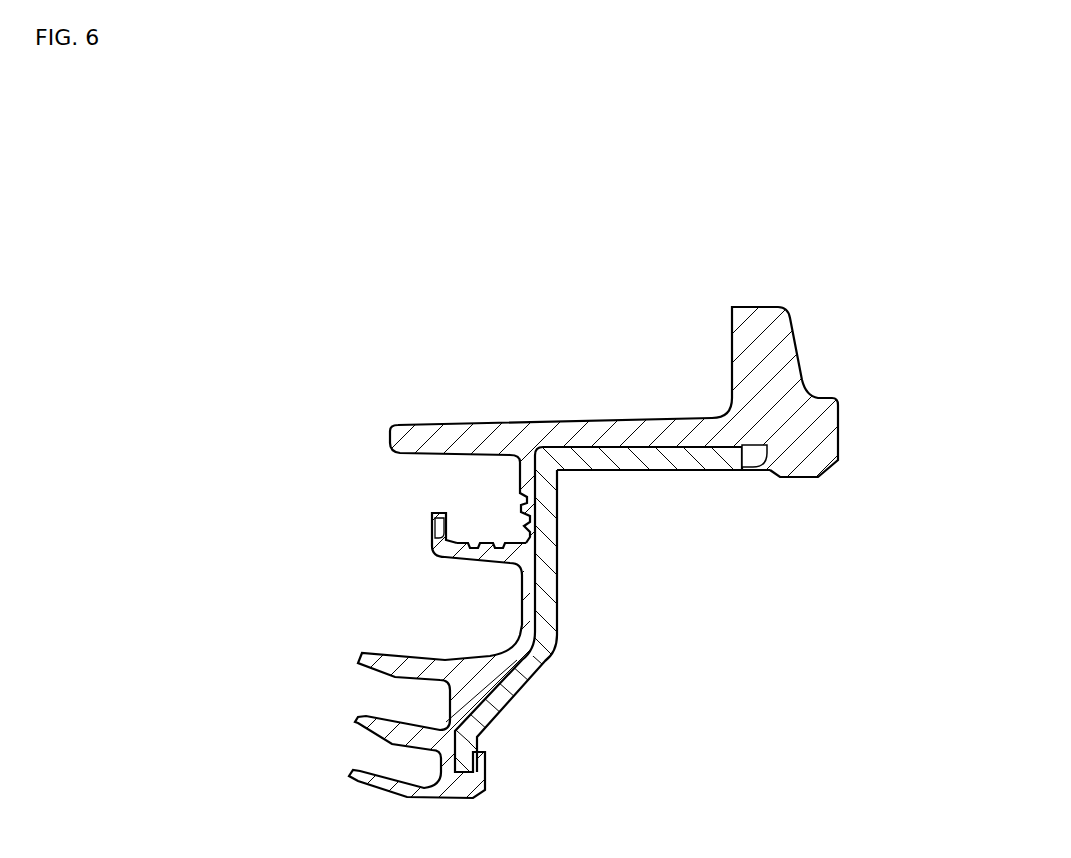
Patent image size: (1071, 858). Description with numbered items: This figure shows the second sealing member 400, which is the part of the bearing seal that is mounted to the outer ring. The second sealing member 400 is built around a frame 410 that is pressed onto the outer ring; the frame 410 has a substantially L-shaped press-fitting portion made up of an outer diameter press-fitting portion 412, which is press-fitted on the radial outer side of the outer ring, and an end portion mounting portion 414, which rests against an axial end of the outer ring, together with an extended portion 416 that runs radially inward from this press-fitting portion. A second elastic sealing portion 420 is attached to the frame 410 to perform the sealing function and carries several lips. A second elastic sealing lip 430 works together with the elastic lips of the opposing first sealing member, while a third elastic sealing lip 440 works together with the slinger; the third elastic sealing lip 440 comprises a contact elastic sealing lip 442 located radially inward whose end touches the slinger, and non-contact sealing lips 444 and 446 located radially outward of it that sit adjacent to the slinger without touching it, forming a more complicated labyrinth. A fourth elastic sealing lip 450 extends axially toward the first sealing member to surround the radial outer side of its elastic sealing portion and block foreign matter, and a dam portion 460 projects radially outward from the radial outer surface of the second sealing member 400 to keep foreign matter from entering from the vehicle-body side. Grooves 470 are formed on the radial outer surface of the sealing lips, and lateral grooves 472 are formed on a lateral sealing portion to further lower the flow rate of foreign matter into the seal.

The second sealing member 400 is at (298, 127).
The frame 410 is at (535, 550).
The outer diameter press-fitting portion 412 is at (648, 463).
The end portion mounting portion 414 is at (552, 607).
The extended portion 416 is at (508, 695).
The second elastic sealing portion 420 is at (818, 342).
The second elastic sealing lip 430 is at (446, 556).
The third elastic sealing lip 440 is at (516, 561).
The contact elastic sealing lip 442 is at (353, 778).
The non-contact sealing lip 444 is at (361, 718).
The non-contact sealing lip 446 is at (357, 660).
The fourth elastic sealing lip 450 is at (432, 437).
The dam portion 460 is at (760, 327).
The grooves 470 is at (475, 537).
The lateral grooves 472 is at (519, 498).